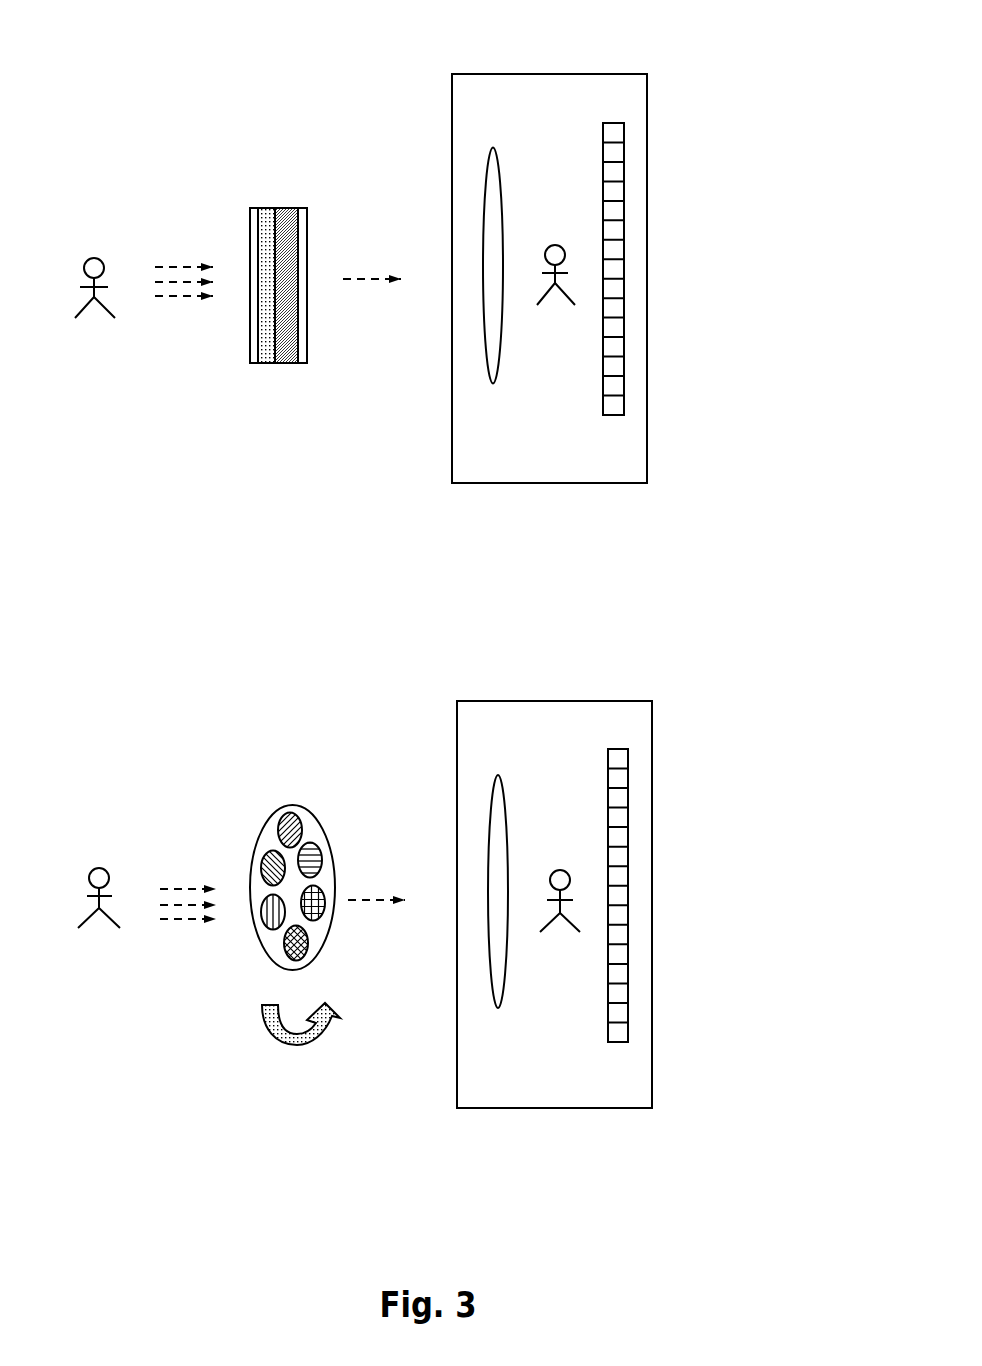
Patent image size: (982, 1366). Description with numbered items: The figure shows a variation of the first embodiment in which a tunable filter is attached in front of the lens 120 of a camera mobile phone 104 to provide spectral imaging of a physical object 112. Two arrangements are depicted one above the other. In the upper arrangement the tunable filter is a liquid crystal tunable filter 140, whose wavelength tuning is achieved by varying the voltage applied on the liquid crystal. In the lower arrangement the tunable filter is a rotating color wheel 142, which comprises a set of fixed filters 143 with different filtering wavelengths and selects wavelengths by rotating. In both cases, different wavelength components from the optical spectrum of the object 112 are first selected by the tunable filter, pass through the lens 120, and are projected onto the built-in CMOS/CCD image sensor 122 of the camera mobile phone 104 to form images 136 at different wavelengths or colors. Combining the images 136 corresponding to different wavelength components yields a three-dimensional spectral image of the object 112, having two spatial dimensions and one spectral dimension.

The camera mobile phone 104 is at (647, 308).
The physical object 112 is at (93, 258).
The lens 120 is at (500, 368).
The CMOS/CCD image sensor 122 is at (615, 415).
The images 136 is at (555, 220).
The liquid crystal tunable filter 140 is at (282, 208).
The rotating color wheel 142 is at (280, 810).
The fixed filters 143 is at (320, 860).